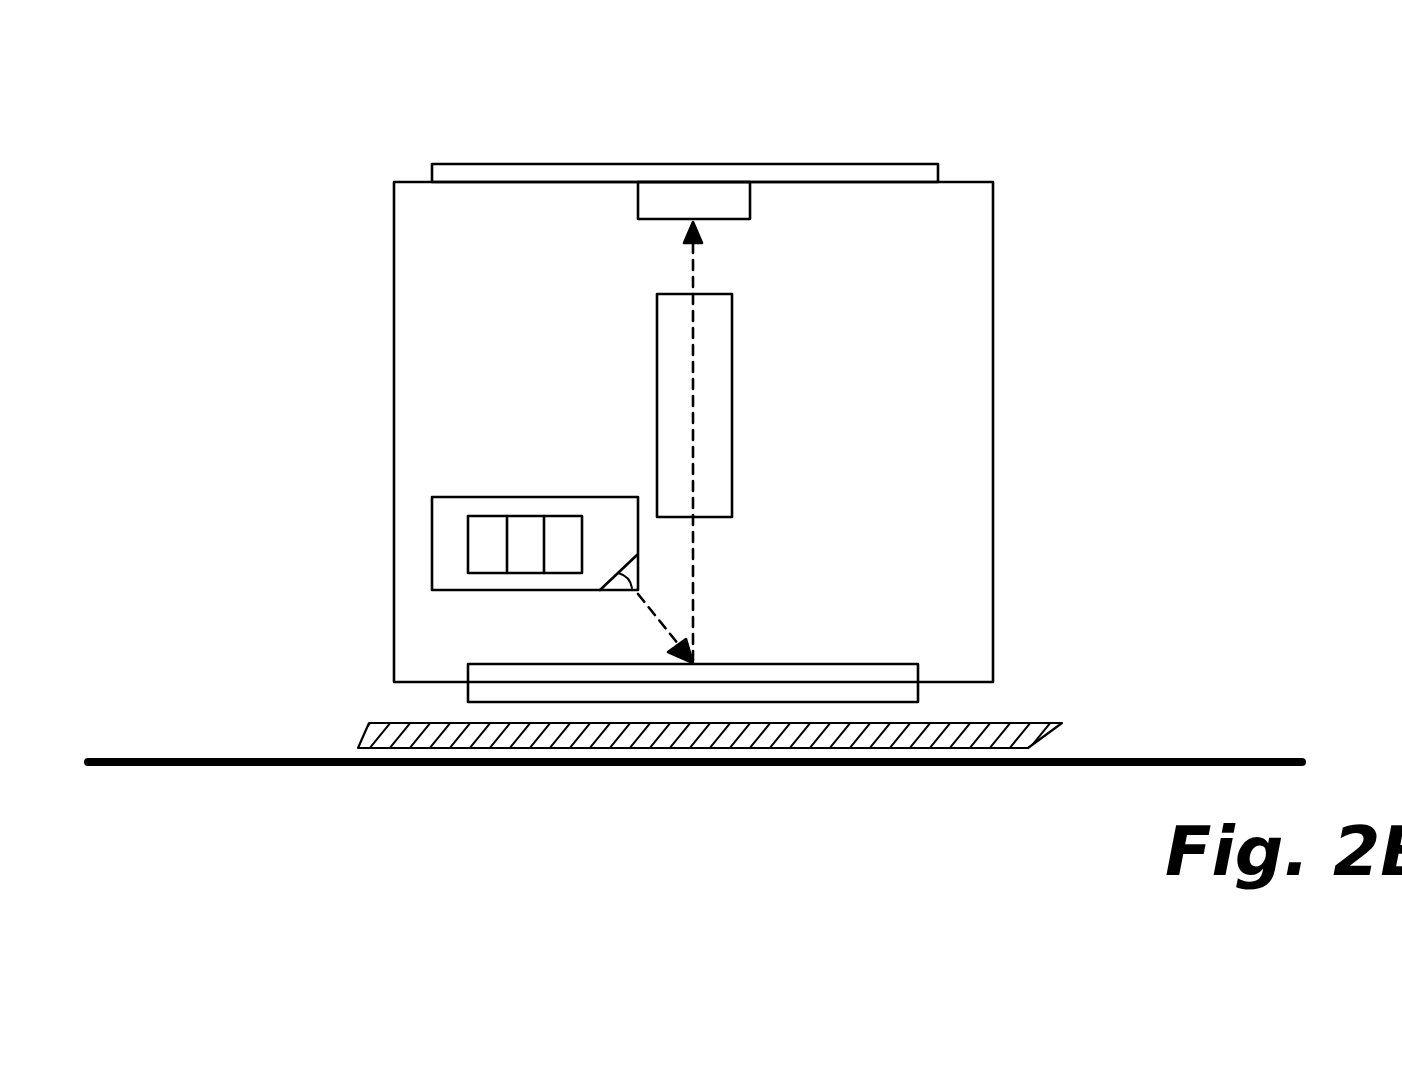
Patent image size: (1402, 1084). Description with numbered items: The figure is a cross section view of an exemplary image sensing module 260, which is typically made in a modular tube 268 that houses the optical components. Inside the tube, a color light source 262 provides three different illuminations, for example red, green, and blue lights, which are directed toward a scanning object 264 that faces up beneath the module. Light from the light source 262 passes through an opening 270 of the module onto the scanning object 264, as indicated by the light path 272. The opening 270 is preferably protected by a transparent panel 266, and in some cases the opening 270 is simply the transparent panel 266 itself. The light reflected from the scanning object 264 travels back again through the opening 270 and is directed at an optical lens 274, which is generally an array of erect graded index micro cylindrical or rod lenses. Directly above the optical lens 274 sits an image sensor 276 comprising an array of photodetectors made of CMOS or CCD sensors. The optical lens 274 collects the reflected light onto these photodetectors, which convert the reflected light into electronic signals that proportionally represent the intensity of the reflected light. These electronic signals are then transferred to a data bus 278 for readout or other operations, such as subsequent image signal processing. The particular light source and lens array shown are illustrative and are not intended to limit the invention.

The image sensing module 260 is at (951, 106).
The color light source 262 is at (452, 535).
The scanning object 264 is at (220, 757).
The transparent panel 266 is at (1053, 740).
The modular tube 268 is at (993, 323).
The opening 270 is at (492, 678).
The emitted light path 272 is at (670, 623).
The optical lens 274 is at (668, 350).
The image sensor 276 is at (692, 193).
The data bus 278 is at (515, 170).